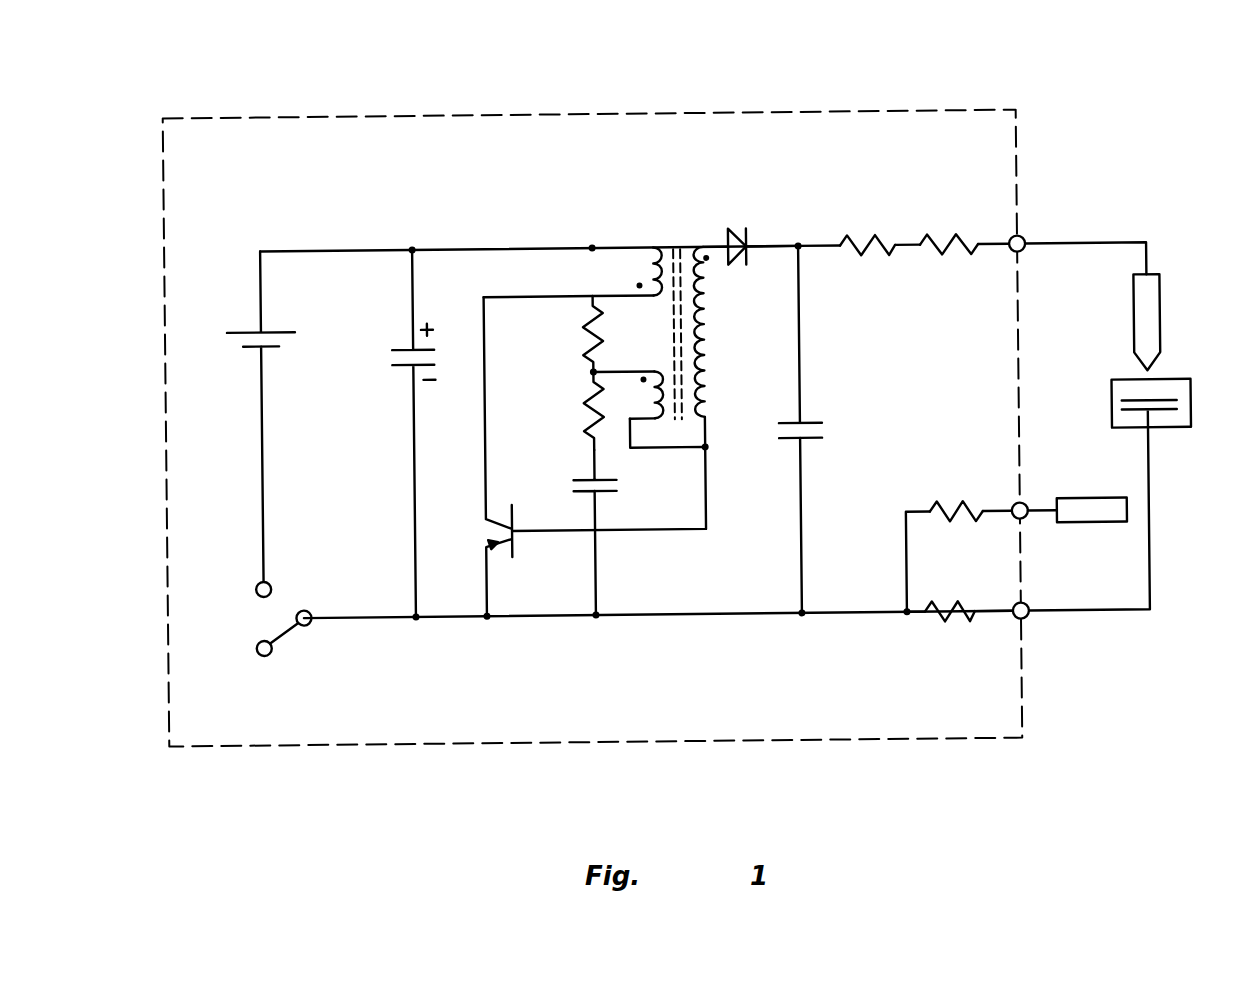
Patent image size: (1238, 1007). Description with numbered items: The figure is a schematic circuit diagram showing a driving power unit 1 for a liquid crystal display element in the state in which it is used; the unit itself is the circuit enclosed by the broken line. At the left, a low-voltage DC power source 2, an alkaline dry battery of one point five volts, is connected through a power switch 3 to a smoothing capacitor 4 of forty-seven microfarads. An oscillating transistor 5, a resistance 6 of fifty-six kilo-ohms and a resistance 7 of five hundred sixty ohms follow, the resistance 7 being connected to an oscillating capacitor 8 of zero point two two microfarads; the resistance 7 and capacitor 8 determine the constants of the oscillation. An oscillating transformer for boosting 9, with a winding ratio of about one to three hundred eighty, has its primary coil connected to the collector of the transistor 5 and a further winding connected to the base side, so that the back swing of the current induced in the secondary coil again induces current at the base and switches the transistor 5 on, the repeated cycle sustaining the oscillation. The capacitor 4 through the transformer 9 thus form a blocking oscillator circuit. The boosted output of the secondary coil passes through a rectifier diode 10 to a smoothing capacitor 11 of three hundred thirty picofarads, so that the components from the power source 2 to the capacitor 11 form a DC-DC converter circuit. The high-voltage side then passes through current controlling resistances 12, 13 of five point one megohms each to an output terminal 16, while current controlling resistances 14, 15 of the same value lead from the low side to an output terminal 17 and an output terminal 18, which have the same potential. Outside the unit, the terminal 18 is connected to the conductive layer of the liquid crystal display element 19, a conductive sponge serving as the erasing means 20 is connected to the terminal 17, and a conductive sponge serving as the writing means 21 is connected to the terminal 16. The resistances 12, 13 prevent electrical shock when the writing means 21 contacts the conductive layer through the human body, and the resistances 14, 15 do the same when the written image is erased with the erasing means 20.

The driving power unit 1 is at (401, 114).
The low-voltage DC power source 2 is at (254, 345).
The power switch 3 is at (301, 626).
The smoothing capacitor 4 is at (399, 346).
The oscillating transistor 5 is at (506, 504).
The resistance 6 is at (591, 314).
The resistance 7 is at (585, 437).
The oscillating capacitor 8 is at (582, 478).
The oscillating transformer for boosting 9 is at (706, 330).
The rectifier diode 10 is at (750, 232).
The smoothing capacitor 11 is at (790, 442).
The current controlling resistance 12 is at (850, 233).
The current controlling resistance 13 is at (942, 232).
The current controlling resistance 14 is at (934, 508).
The current controlling resistance 15 is at (938, 624).
The output terminal 16 is at (1024, 242).
The output terminal 17 is at (1028, 508).
The output terminal 18 is at (1027, 622).
The liquid crystal display element 19 is at (1177, 392).
The erasing means 20 is at (1089, 527).
The writing means 21 is at (1162, 294).